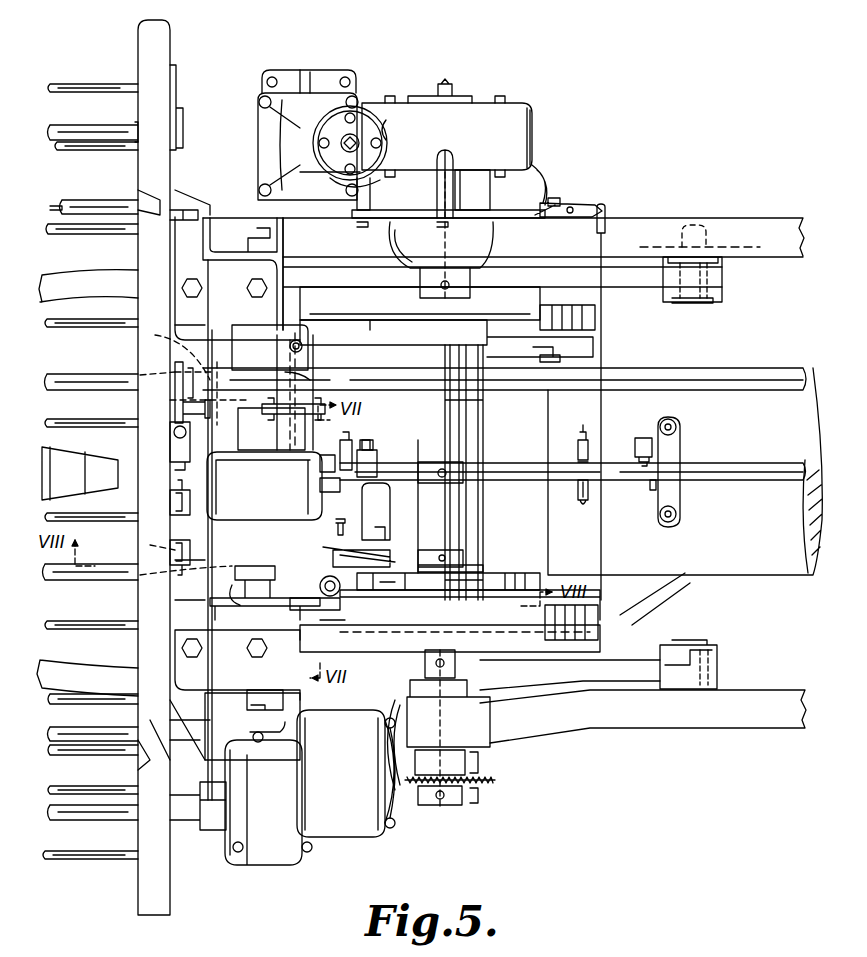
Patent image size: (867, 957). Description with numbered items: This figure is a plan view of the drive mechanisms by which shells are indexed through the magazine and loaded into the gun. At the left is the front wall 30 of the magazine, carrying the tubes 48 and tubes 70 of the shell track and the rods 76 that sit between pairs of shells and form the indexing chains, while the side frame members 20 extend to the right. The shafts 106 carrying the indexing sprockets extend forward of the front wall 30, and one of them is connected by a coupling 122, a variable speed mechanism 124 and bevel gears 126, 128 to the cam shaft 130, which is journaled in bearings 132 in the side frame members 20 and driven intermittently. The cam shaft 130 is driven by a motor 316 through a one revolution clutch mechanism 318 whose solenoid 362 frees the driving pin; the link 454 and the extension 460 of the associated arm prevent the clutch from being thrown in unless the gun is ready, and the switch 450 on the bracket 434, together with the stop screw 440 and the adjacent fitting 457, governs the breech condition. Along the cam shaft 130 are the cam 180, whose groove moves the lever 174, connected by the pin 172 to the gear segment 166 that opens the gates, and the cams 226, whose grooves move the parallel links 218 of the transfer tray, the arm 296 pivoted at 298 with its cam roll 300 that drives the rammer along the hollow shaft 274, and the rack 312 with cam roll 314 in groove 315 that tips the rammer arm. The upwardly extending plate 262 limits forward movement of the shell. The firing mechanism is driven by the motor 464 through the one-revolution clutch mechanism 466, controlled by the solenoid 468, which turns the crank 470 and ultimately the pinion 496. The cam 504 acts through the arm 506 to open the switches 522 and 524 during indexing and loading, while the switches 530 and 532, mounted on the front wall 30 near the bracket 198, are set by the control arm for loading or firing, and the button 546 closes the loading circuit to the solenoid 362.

The side frame members 20 is at (750, 222).
The front wall 30 is at (158, 42).
The tubes 48 is at (58, 236).
The tubes 70 is at (89, 207).
The rod 76 is at (82, 150).
The shafts 106 is at (64, 128).
The coupling 122 is at (205, 832).
The variable speed mechanism 124 is at (338, 833).
The bevel gear 126 is at (400, 800).
The bevel gear 128 is at (493, 782).
The cam shaft 130 is at (445, 412).
The bearings 132 is at (485, 242).
The gear segment 166 is at (374, 555).
The pin 172 is at (345, 528).
The lever 174 is at (430, 560).
The cam 180 is at (508, 578).
The bracket 198 is at (197, 392).
The parallel links 218 is at (110, 276).
The cams 226 is at (598, 320).
The upwardly extending plate 262 is at (128, 484).
The hollow shaft 274 is at (702, 380).
The arm 296 is at (496, 338).
The pivot 298 is at (560, 355).
The cam roll 300 is at (375, 328).
The rack 312 is at (345, 607).
The cam roll 314 is at (335, 628).
The groove 315 is at (517, 598).
The motor 316 is at (318, 95).
The one revolution clutch mechanism 318 is at (490, 110).
The solenoid 362 is at (552, 178).
The bracket 434 is at (672, 447).
The stop screw 440 is at (585, 430).
The switch 450 is at (643, 438).
The link 454 is at (603, 298).
The fitting 457 is at (580, 505).
The extension 460 is at (560, 205).
The motor 464 is at (290, 348).
The one-revolution clutch mechanism 466 is at (264, 486).
The solenoid 468 is at (285, 430).
The crank 470 is at (246, 600).
The pinion 496 is at (340, 520).
The cam 504 is at (481, 462).
The arm 506 is at (384, 461).
The switch 522 is at (348, 460).
The switch 524 is at (365, 452).
The switch 530 is at (190, 568).
The switch 532 is at (170, 507).
The button 546 is at (172, 432).